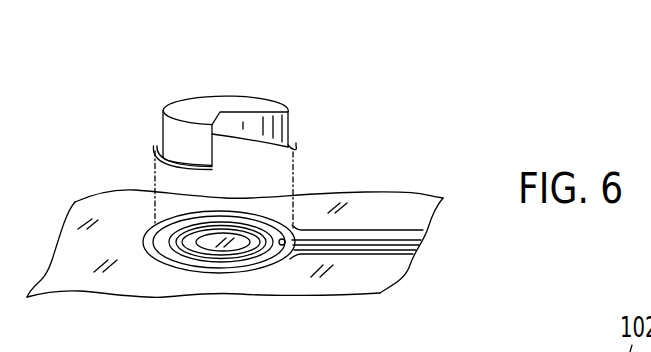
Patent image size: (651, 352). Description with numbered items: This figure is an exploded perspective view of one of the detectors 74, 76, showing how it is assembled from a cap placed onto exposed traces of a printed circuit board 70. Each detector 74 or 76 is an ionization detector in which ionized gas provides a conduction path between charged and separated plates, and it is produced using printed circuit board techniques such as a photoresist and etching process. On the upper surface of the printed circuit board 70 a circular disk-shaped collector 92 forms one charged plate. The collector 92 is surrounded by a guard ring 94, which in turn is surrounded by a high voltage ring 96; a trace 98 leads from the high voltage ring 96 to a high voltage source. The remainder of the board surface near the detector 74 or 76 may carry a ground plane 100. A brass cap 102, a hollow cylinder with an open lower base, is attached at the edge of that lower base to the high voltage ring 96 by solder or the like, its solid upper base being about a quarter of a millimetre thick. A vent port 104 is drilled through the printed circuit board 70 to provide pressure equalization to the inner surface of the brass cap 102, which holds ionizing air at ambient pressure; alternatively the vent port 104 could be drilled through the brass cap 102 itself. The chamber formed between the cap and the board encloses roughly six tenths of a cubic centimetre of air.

The printed circuit board 70 is at (407, 192).
The detector 74 is at (192, 117).
The detector 76 is at (155, 78).
The collector 92 is at (237, 245).
The guard ring 94 is at (200, 257).
The high voltage ring 96 is at (160, 248).
The trace 98 is at (367, 243).
The ground plane 100 is at (98, 203).
The brass cap 102 is at (218, 105).
The vent port 104 is at (283, 246).